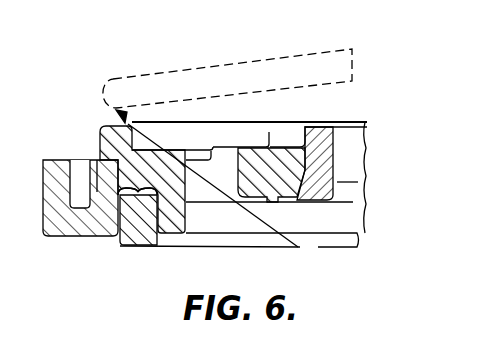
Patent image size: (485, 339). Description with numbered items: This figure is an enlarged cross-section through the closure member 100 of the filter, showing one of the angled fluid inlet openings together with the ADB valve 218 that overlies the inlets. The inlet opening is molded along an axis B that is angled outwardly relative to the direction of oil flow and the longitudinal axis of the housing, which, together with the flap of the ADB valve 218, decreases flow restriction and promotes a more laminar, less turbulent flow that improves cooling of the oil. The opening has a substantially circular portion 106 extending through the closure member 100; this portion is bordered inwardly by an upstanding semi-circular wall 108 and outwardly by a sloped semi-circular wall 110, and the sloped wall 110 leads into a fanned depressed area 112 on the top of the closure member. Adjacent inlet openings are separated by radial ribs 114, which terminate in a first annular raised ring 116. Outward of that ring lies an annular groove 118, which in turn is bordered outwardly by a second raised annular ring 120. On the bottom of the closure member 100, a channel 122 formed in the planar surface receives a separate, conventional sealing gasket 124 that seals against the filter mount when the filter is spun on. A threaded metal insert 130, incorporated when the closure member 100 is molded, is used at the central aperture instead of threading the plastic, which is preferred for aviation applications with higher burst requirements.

The closure member 100 is at (78, 80).
The ADB valve 218 is at (258, 31).
The second raised annular ring 120 is at (44, 161).
The annular groove 118 is at (79, 209).
The first annular raised ring 116 is at (100, 134).
The channel 122 is at (120, 236).
The sealing gasket 124 is at (141, 246).
The fanned depressed area 112 is at (193, 150).
The radial ribs 114 is at (246, 130).
The upstanding semi-circular wall 108 is at (238, 176).
The circular portion 106 is at (252, 203).
The sloped semi-circular wall 110 is at (239, 224).
The insert 130 is at (318, 204).
The axis of inlet opening B is at (220, 193).